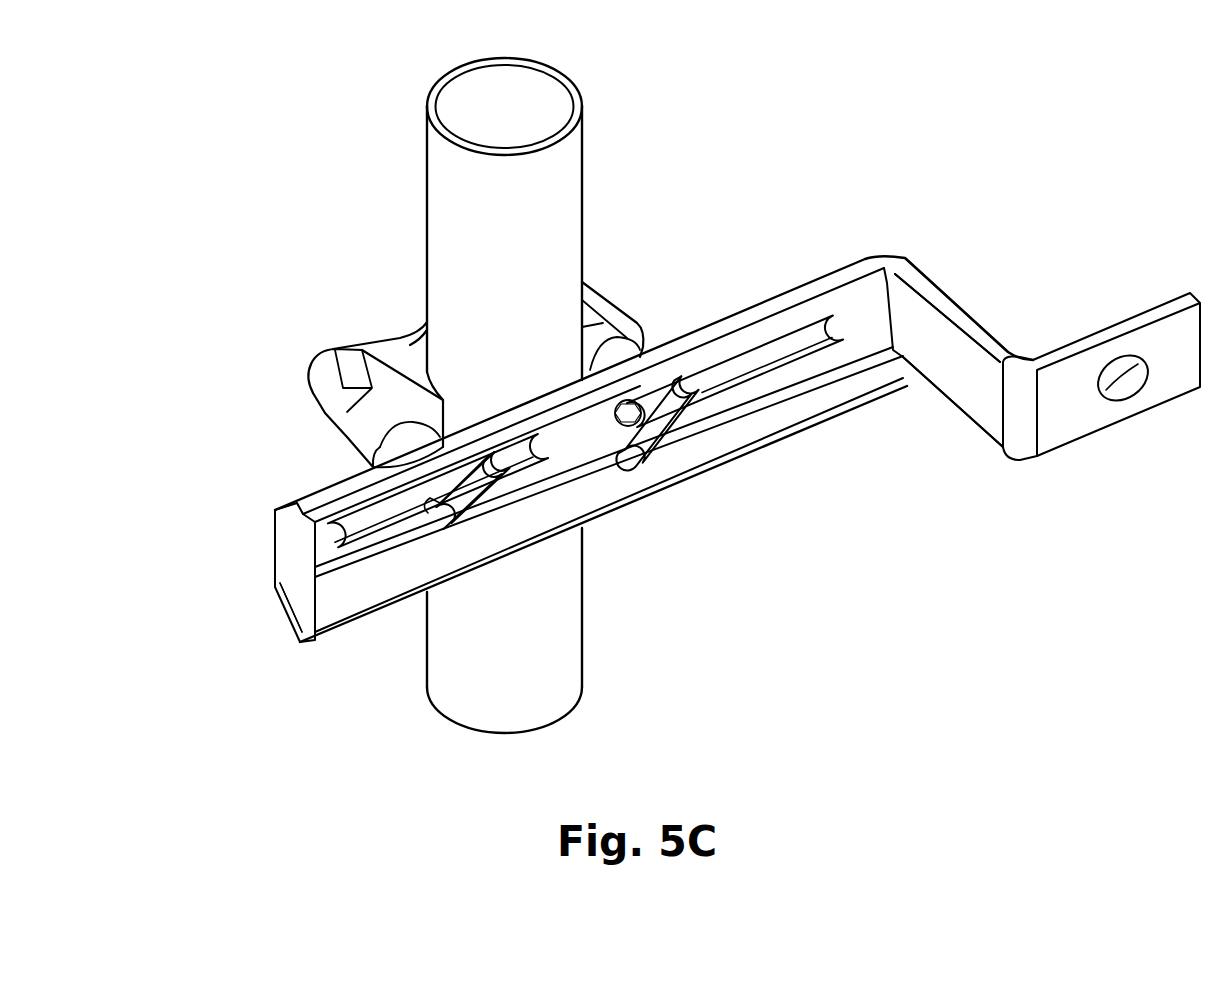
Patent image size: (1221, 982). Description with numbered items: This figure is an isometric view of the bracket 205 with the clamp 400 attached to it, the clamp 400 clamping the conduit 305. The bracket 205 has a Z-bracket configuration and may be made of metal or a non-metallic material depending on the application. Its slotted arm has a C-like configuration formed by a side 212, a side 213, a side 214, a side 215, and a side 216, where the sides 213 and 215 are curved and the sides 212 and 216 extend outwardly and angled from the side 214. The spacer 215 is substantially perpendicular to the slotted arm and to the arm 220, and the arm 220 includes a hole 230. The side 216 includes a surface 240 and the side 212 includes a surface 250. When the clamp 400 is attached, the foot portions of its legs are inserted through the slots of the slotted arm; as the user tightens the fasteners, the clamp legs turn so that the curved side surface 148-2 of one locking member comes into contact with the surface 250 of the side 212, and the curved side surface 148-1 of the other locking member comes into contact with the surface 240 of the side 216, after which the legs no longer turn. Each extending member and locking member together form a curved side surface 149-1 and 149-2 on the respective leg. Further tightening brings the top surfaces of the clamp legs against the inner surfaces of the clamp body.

The conduit 305 is at (554, 183).
The bracket 205 is at (665, 466).
The surface 240 is at (730, 437).
The surface 250 is at (315, 640).
The side 212 is at (297, 504).
The side 213 is at (272, 507).
The side 214 is at (275, 553).
The spacer 215 is at (958, 362).
The side 216 is at (282, 626).
The arm 220 is at (1109, 395).
The hole 230 is at (1124, 374).
The curved side surface 148-1 is at (620, 473).
The curved side surface 148-2 is at (517, 457).
The curved side surface 149-1 is at (692, 374).
The curved side surface 149-2 is at (437, 524).
The clamp 400 is at (350, 332).